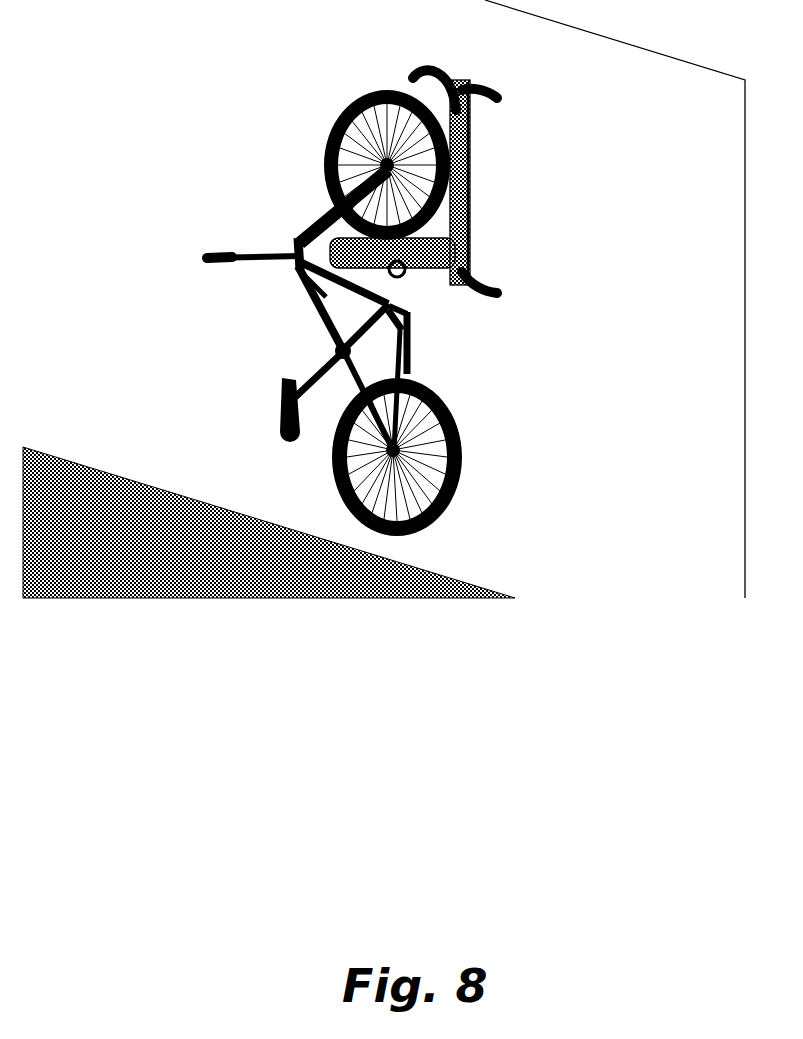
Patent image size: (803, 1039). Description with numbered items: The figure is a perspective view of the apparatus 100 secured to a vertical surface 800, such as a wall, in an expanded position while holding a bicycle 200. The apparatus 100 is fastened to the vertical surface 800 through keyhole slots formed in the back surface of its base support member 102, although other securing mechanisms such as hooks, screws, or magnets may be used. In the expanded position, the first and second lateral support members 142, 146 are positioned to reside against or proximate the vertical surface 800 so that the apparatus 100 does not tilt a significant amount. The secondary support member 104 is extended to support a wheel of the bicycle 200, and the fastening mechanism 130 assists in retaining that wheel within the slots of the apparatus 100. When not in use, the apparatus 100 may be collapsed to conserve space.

The apparatus 100 is at (586, 135).
The base support member 102 is at (478, 147).
The secondary support member 104 is at (424, 273).
The fastening mechanism 130 is at (472, 187).
The first lateral support member 142 is at (506, 250).
The second lateral support member 146 is at (390, 68).
The bicycle 200 is at (228, 200).
The vertical surface 800 is at (621, 384).